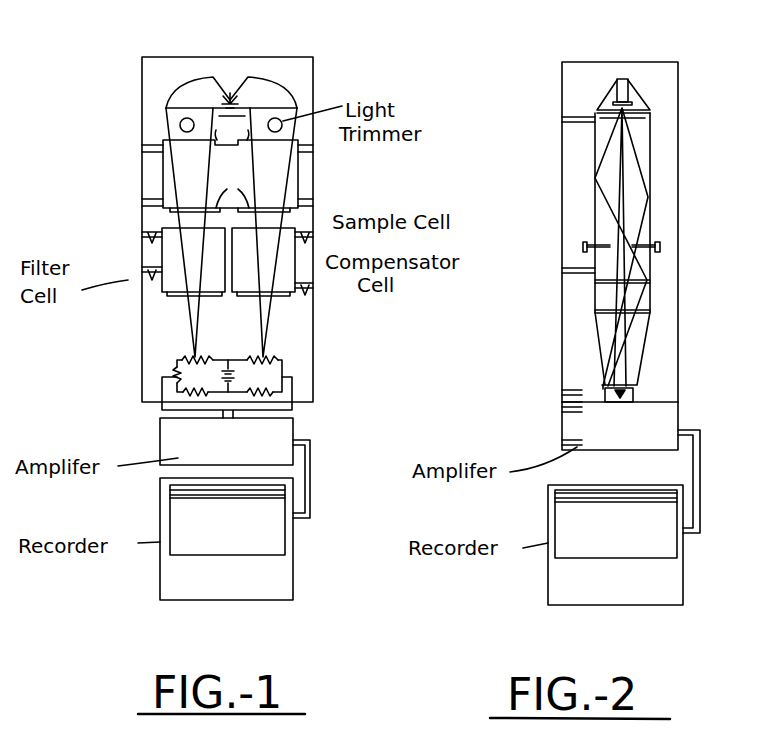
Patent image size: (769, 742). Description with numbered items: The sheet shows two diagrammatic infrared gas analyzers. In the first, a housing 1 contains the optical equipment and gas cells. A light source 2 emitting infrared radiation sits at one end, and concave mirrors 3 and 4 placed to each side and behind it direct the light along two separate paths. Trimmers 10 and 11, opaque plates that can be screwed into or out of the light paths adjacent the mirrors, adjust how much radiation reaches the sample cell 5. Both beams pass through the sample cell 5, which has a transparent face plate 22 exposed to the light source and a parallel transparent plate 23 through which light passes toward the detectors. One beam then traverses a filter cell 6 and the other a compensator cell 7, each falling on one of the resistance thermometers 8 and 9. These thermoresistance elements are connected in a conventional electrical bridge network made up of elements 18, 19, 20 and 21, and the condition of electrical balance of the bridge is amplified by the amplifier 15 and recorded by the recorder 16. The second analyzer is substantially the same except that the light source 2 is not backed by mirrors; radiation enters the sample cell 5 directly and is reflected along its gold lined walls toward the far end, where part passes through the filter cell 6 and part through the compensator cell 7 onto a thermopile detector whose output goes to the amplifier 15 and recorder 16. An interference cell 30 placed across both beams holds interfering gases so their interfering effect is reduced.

In FIG. 1, the housing 1 is at (142, 98).
In FIG. 2, the housing 1 is at (562, 187).
In FIG. 1, the light source 2 is at (231, 100).
In FIG. 2, the light source 2 is at (632, 88).
In FIG. 1, the concave mirror 3 is at (273, 85).
In FIG. 1, the concave mirror 4 is at (197, 82).
In FIG. 1, the sample cell 5 is at (300, 200).
In FIG. 2, the sample cell 5 is at (650, 188).
In FIG. 1, the filter cell 6 is at (167, 298).
In FIG. 2, the filter cell 6 is at (595, 333).
In FIG. 1, the compensator cell 7 is at (278, 285).
In FIG. 2, the compensator cell 7 is at (647, 340).
In FIG. 1, the resistance thermometer 8 is at (273, 357).
In FIG. 2, the resistance thermometer 8 is at (633, 390).
In FIG. 1, the resistance thermometer 9 is at (188, 358).
In FIG. 2, the resistance thermometer 9 is at (603, 385).
In FIG. 1, the trimmer 10 is at (280, 129).
In FIG. 2, the trimmer 10 is at (658, 245).
In FIG. 1, the trimmer 11 is at (181, 128).
In FIG. 2, the trimmer 11 is at (583, 243).
In FIG. 1, the amplifier 15 is at (167, 428).
In FIG. 2, the amplifier 15 is at (678, 420).
In FIG. 1, the recorder 16 is at (278, 575).
In FIG. 2, the recorder 16 is at (685, 573).
In FIG. 1, the bridge network element 18 is at (265, 393).
In FIG. 1, the bridge network element 19 is at (267, 393).
In FIG. 1, the bridge network element 20 is at (182, 375).
In FIG. 1, the bridge network element 21 is at (168, 374).
In FIG. 1, the transparent face plate 22 is at (232, 127).
In FIG. 2, the transparent face plate 22 is at (638, 118).
In FIG. 1, the transparent plate 23 is at (234, 186).
In FIG. 2, the transparent plate 23 is at (643, 280).
In FIG. 2, the interference cell 30 is at (650, 305).